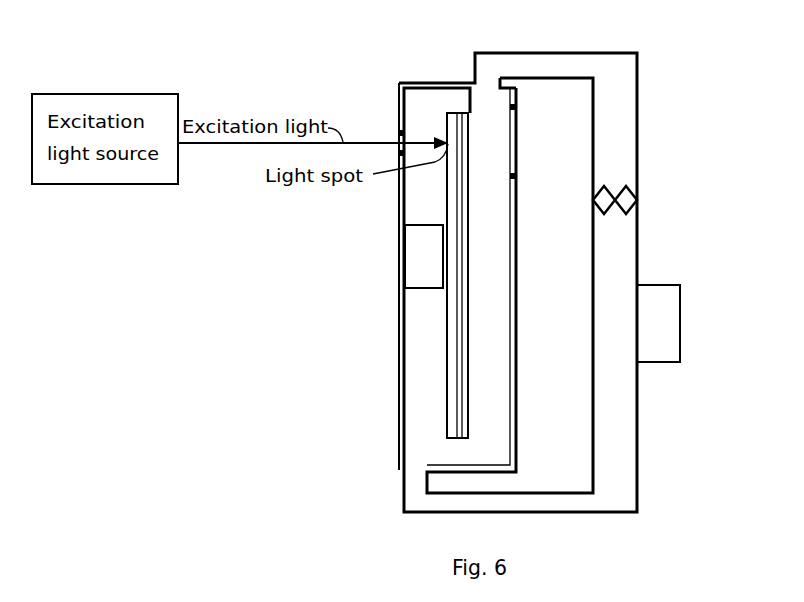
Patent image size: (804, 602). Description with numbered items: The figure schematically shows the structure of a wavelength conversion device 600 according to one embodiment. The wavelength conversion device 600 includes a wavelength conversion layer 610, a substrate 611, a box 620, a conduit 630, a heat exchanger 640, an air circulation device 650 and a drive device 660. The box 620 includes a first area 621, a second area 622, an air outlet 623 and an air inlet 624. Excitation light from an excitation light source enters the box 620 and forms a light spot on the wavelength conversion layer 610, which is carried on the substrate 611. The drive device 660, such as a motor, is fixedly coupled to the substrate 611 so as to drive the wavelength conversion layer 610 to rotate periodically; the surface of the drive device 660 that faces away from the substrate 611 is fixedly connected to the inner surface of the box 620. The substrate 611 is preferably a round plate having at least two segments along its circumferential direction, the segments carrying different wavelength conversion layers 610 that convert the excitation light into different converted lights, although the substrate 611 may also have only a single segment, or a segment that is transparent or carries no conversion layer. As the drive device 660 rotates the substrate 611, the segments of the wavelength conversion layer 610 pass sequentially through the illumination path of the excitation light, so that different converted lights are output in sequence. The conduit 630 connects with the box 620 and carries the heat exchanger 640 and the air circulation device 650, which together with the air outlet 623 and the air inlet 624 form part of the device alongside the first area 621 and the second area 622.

The wavelength conversion device 600 is at (308, 97).
The wavelength conversion layer 610 is at (466, 112).
The substrate 611 is at (455, 112).
The box 620 is at (398, 407).
The first area 621 is at (401, 144).
The second area 622 is at (513, 136).
The air outlet 623 is at (487, 87).
The air inlet 624 is at (415, 467).
The conduit 630 is at (623, 446).
The heat exchanger 640 is at (663, 320).
The air circulation device 650 is at (637, 202).
The drive device 660 is at (427, 262).